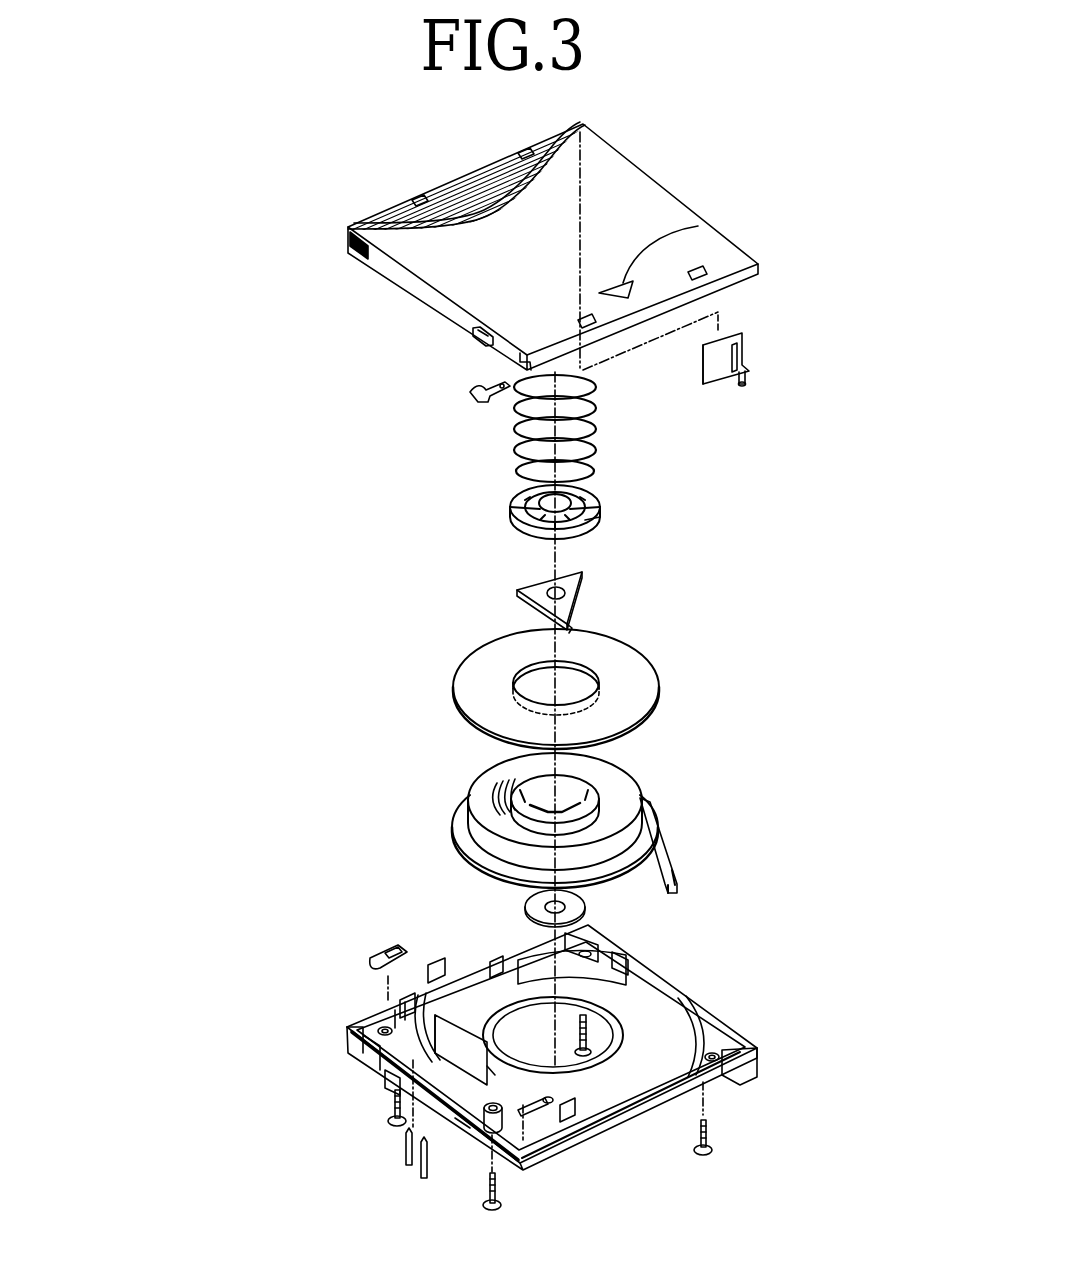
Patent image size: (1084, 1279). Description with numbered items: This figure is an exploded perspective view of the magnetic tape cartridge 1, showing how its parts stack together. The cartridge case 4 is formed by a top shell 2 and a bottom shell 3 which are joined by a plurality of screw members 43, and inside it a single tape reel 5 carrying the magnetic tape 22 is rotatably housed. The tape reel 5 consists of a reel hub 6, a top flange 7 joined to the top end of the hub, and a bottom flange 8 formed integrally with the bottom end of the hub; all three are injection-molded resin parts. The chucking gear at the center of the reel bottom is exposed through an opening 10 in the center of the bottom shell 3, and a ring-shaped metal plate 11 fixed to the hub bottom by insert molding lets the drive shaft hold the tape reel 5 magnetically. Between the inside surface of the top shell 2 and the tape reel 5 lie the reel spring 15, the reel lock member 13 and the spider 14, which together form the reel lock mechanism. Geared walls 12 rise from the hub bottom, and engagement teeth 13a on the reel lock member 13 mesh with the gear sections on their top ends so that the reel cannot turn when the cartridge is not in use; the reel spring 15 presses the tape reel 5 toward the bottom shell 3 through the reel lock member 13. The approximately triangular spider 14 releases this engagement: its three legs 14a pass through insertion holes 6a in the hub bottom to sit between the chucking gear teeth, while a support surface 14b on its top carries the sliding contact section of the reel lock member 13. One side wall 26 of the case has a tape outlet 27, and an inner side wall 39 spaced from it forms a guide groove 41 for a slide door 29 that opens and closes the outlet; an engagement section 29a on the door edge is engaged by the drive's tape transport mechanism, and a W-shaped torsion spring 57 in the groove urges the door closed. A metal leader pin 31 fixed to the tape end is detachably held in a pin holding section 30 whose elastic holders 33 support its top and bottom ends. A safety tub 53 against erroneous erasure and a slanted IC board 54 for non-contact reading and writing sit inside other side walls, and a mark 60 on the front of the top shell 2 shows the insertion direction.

The magnetic tape cartridge 1 is at (298, 233).
The top shell 2 is at (385, 274).
The bottom shell 3 is at (343, 1040).
The cartridge case 4 is at (214, 556).
The tape reel 5 is at (768, 657).
The reel hub 6 is at (582, 780).
The insertion holes 6a is at (600, 786).
The top flange 7 is at (637, 673).
The bottom flange 8 is at (652, 806).
The opening 10 is at (617, 1025).
The ring-shaped metal plate 11 is at (532, 904).
The geared walls 12 is at (538, 807).
The reel lock member 13 is at (512, 505).
The engagement teeth 13a is at (597, 542).
The spider 14 is at (592, 587).
The legs 14a is at (520, 603).
The support surface 14b is at (590, 614).
The reel spring 15 is at (598, 440).
The magnetic tape 22 is at (478, 783).
The side wall 26 is at (437, 1143).
The tape outlet 27 is at (485, 345).
The slide door 29 is at (432, 962).
The engagement section 29a is at (490, 1070).
The pin holding section 30 is at (505, 1177).
The leader pin 31 is at (680, 840).
The elastic holders 33 is at (470, 395).
The side wall 39 is at (460, 1042).
The guide groove 41 is at (388, 1078).
The screw members 43 is at (386, 1118).
The safety tub 53 is at (745, 343).
The IC board 54 is at (365, 972).
The W-shaped torsion spring 57 is at (408, 1165).
The mark 60 is at (698, 226).